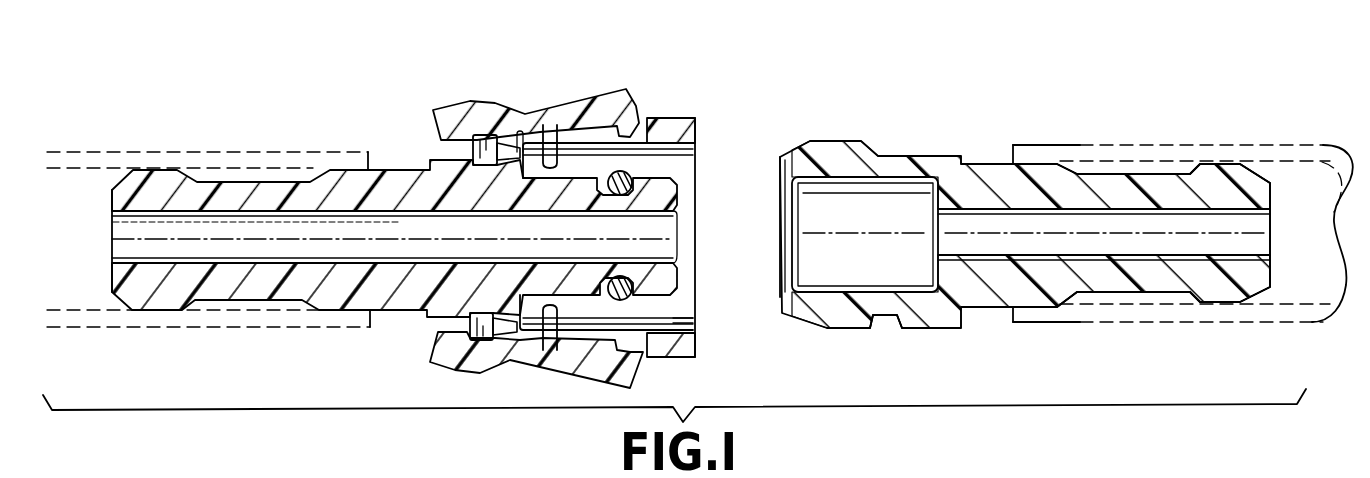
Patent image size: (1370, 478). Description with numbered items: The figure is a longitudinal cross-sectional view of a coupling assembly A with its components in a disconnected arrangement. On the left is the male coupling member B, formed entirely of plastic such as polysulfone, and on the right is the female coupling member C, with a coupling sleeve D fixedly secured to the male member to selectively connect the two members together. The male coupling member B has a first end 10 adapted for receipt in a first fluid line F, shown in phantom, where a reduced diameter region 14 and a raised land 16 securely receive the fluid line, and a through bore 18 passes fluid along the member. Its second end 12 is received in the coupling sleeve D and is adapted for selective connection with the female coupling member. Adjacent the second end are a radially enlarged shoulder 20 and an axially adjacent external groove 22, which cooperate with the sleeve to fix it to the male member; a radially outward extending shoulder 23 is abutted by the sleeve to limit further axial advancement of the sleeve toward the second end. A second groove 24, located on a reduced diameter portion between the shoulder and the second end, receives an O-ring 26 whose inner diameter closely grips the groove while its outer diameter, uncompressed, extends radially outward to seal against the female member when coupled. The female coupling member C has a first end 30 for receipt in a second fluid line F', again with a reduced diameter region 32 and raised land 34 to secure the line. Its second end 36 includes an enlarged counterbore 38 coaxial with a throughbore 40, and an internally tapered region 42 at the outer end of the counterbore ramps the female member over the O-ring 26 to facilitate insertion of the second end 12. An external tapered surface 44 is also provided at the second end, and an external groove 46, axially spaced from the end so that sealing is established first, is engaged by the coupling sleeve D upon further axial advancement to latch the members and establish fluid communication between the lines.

The first end 10 is at (133, 176).
The second end 12 is at (677, 194).
The reduced diameter region 14 is at (262, 178).
The raised land 16 is at (163, 311).
The bore 18 is at (225, 214).
The radially enlarged shoulder 20 is at (459, 168).
The external groove 22 is at (473, 146).
The radially outward extending shoulder 23 is at (507, 165).
The second groove 24 is at (606, 280).
The O-ring 26 is at (634, 176).
The first end 30 is at (1214, 175).
The reduced diameter region 32 is at (1157, 175).
The raised land 34 is at (1221, 304).
The second end 36 is at (808, 163).
The enlarged counterbore 38 is at (874, 291).
The throughbore 40 is at (1097, 260).
The internally tapered region 42 is at (781, 291).
The external tapered surface 44 is at (797, 323).
The external groove 46 is at (887, 320).
The coupling assembly A is at (605, 416).
The male coupling member B is at (360, 333).
The female coupling member C is at (924, 132).
The coupling sleeve D is at (510, 92).
The first fluid line F is at (208, 264).
The second fluid line F' is at (1183, 256).